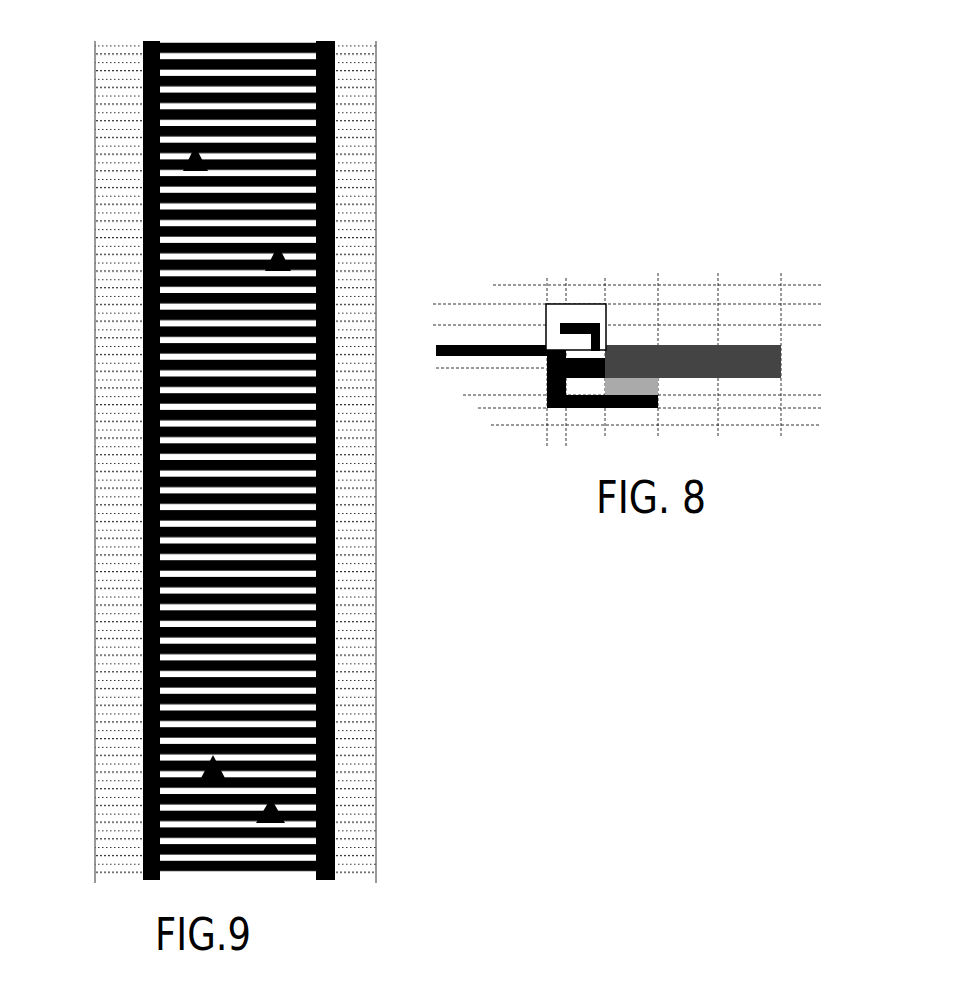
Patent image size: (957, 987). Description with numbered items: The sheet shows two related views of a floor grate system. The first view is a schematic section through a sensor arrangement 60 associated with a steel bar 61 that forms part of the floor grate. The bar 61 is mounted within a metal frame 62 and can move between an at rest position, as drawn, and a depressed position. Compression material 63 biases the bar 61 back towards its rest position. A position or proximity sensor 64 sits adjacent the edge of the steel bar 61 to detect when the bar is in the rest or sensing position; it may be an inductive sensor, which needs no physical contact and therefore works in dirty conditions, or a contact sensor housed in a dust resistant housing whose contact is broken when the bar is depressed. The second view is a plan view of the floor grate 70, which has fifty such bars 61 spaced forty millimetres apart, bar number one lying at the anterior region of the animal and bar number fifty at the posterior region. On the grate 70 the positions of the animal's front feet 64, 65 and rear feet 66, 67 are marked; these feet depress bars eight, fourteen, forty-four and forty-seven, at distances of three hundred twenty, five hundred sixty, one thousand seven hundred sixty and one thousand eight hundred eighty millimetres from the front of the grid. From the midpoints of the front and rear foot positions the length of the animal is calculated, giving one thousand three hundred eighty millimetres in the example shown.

In FIG. 8, the sensor arrangement 60 is at (618, 263).
In FIG. 9, the steel bar 61 is at (330, 178).
In FIG. 8, the steel bar 61 is at (775, 351).
In FIG. 8, the metal frame 62 is at (530, 380).
In FIG. 8, the compression material 63 is at (653, 381).
In FIG. 9, the position or proximity sensor 64 is at (185, 152).
In FIG. 8, the position or proximity sensor 64 is at (550, 295).
In FIG. 9, the front foot position 65 is at (290, 250).
In FIG. 9, the rear foot position 66 is at (190, 764).
In FIG. 9, the rear foot position 67 is at (328, 802).
In FIG. 9, the floor grate 70 is at (375, 107).